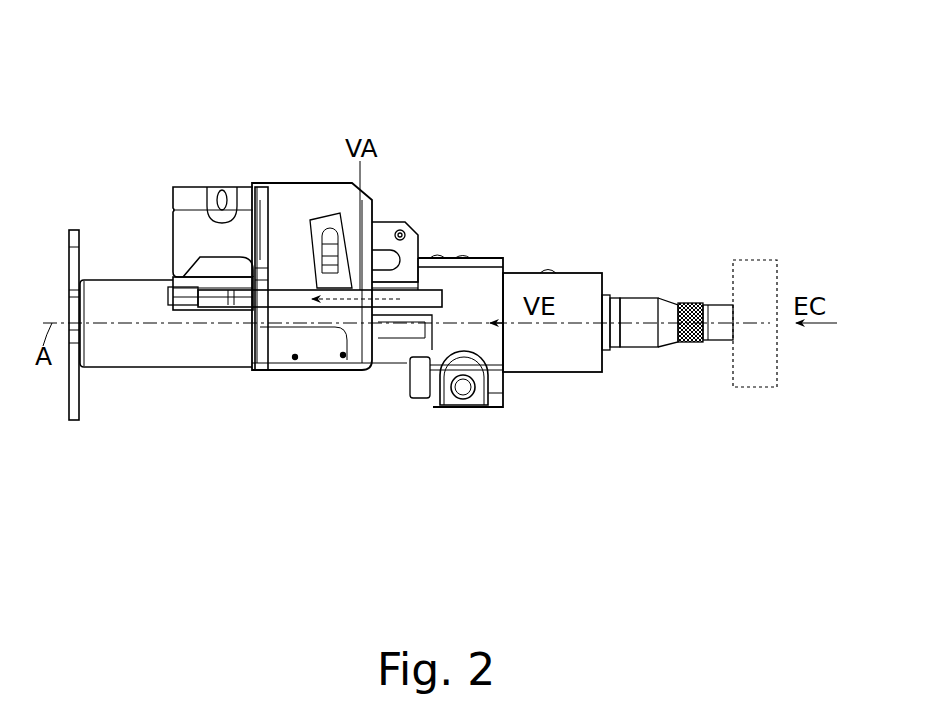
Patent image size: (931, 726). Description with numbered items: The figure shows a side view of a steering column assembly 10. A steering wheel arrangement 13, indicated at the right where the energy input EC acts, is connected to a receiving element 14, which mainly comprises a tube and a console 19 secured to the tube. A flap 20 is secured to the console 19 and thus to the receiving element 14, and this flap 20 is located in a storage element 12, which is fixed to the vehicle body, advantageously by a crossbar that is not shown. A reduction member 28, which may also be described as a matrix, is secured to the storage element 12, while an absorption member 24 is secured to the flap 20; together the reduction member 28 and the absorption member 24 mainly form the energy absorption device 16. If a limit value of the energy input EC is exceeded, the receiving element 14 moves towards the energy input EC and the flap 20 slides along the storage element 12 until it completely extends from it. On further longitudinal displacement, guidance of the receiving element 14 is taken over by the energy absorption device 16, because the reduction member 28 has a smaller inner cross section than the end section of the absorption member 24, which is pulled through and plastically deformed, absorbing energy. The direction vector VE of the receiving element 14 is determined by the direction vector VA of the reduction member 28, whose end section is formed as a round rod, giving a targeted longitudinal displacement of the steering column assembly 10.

The steering column assembly 10 is at (427, 140).
The storage element 12 is at (207, 283).
The steering wheel arrangement 13 is at (755, 273).
The receiving element 14 is at (115, 302).
The energy absorption device 16 is at (345, 330).
The console 19 is at (193, 235).
The flap 20 is at (172, 296).
The absorption member 24 is at (428, 303).
The reduction member 28 is at (258, 287).